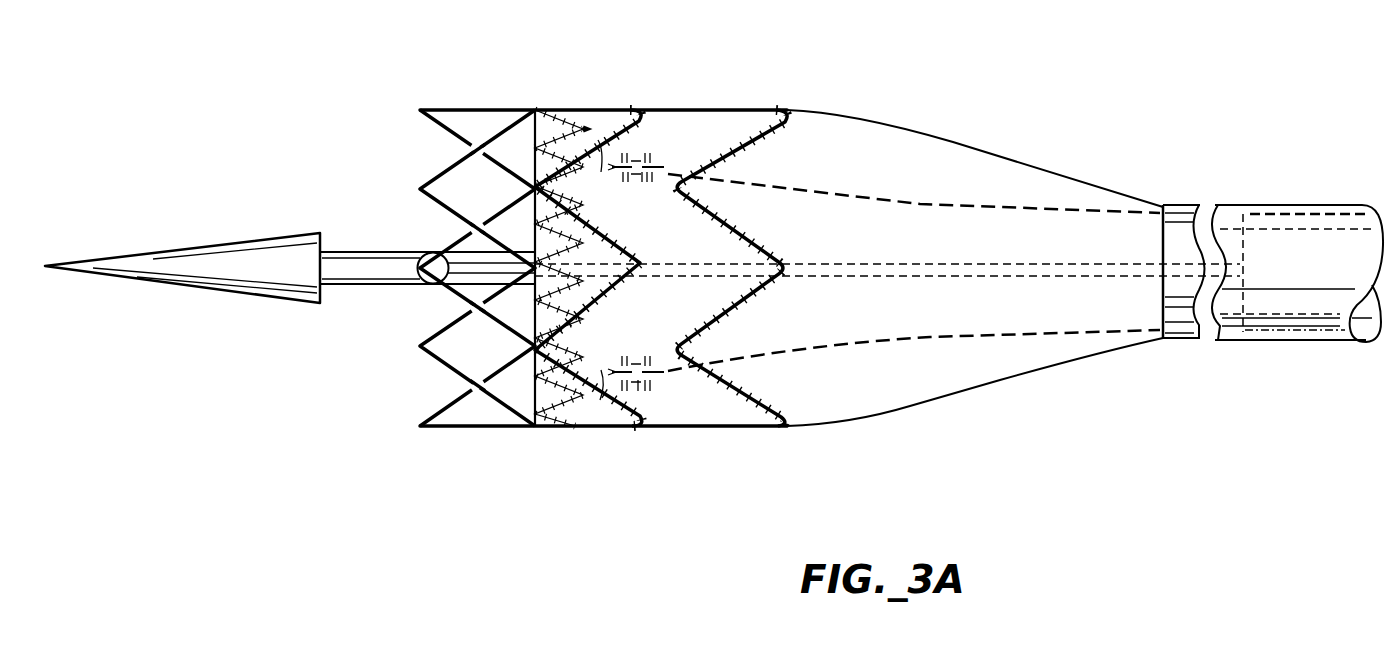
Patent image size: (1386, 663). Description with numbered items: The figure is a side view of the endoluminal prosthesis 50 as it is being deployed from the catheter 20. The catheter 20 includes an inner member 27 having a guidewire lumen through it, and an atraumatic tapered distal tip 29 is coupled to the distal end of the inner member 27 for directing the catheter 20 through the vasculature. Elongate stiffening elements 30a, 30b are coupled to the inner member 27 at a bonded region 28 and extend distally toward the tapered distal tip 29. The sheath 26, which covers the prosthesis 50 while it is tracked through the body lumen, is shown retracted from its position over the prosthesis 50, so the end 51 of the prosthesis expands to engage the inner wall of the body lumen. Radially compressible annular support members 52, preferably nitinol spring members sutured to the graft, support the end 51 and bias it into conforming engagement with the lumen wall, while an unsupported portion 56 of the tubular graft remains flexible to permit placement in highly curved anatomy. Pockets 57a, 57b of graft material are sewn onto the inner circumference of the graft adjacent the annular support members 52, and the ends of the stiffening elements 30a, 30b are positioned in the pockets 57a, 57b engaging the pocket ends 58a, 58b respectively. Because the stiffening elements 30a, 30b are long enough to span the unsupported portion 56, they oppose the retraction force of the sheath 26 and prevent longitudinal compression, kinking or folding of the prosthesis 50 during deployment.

The catheter 20 is at (1260, 160).
The sheath 26 is at (1180, 204).
The inner member 27 is at (1005, 264).
The bonded region 28 is at (1302, 332).
The atraumatic tapered distal tip 29 is at (303, 233).
The elongate stiffening element 30a is at (918, 205).
The elongate stiffening element 30b is at (1005, 330).
The endoluminal prosthesis 50 is at (685, 510).
The end of the tubular graft 51 is at (584, 128).
The annular support member 52 is at (572, 120).
The unsupported portion 56 is at (955, 143).
The pocket 57a is at (651, 142).
The pocket 57b is at (643, 396).
The end of the pocket 58a is at (601, 160).
The end of the pocket 58b is at (607, 373).